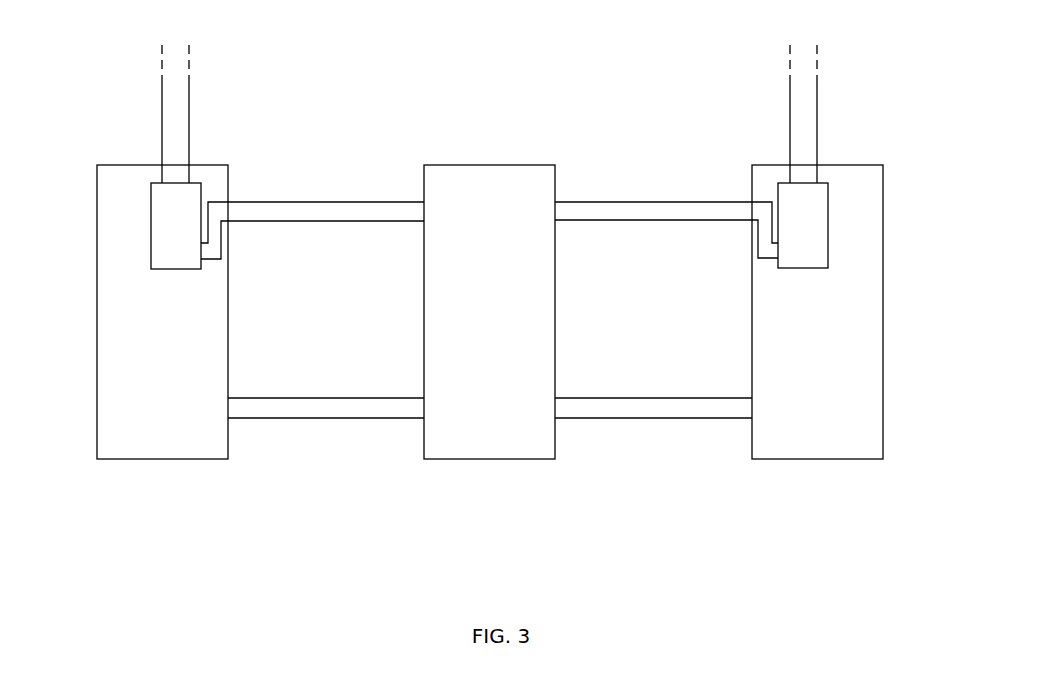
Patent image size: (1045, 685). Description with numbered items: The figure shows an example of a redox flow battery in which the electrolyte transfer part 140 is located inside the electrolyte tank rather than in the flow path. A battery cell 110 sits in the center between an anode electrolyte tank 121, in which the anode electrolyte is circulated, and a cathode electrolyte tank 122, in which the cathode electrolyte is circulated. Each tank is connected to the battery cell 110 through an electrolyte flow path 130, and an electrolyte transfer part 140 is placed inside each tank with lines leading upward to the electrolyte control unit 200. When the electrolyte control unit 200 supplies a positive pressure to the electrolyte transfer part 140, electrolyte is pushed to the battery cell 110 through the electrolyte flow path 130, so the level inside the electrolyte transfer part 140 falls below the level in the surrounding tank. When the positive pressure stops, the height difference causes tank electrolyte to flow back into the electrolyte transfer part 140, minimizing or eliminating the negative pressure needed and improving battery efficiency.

The battery cell 110 is at (490, 165).
The anode electrolyte tank 121 is at (169, 442).
The cathode electrolyte tank 122 is at (817, 443).
The electrolyte flow path 130 is at (315, 212).
The electrolyte transfer part 140 is at (163, 225).
The electrolyte control unit 200 is at (790, 117).